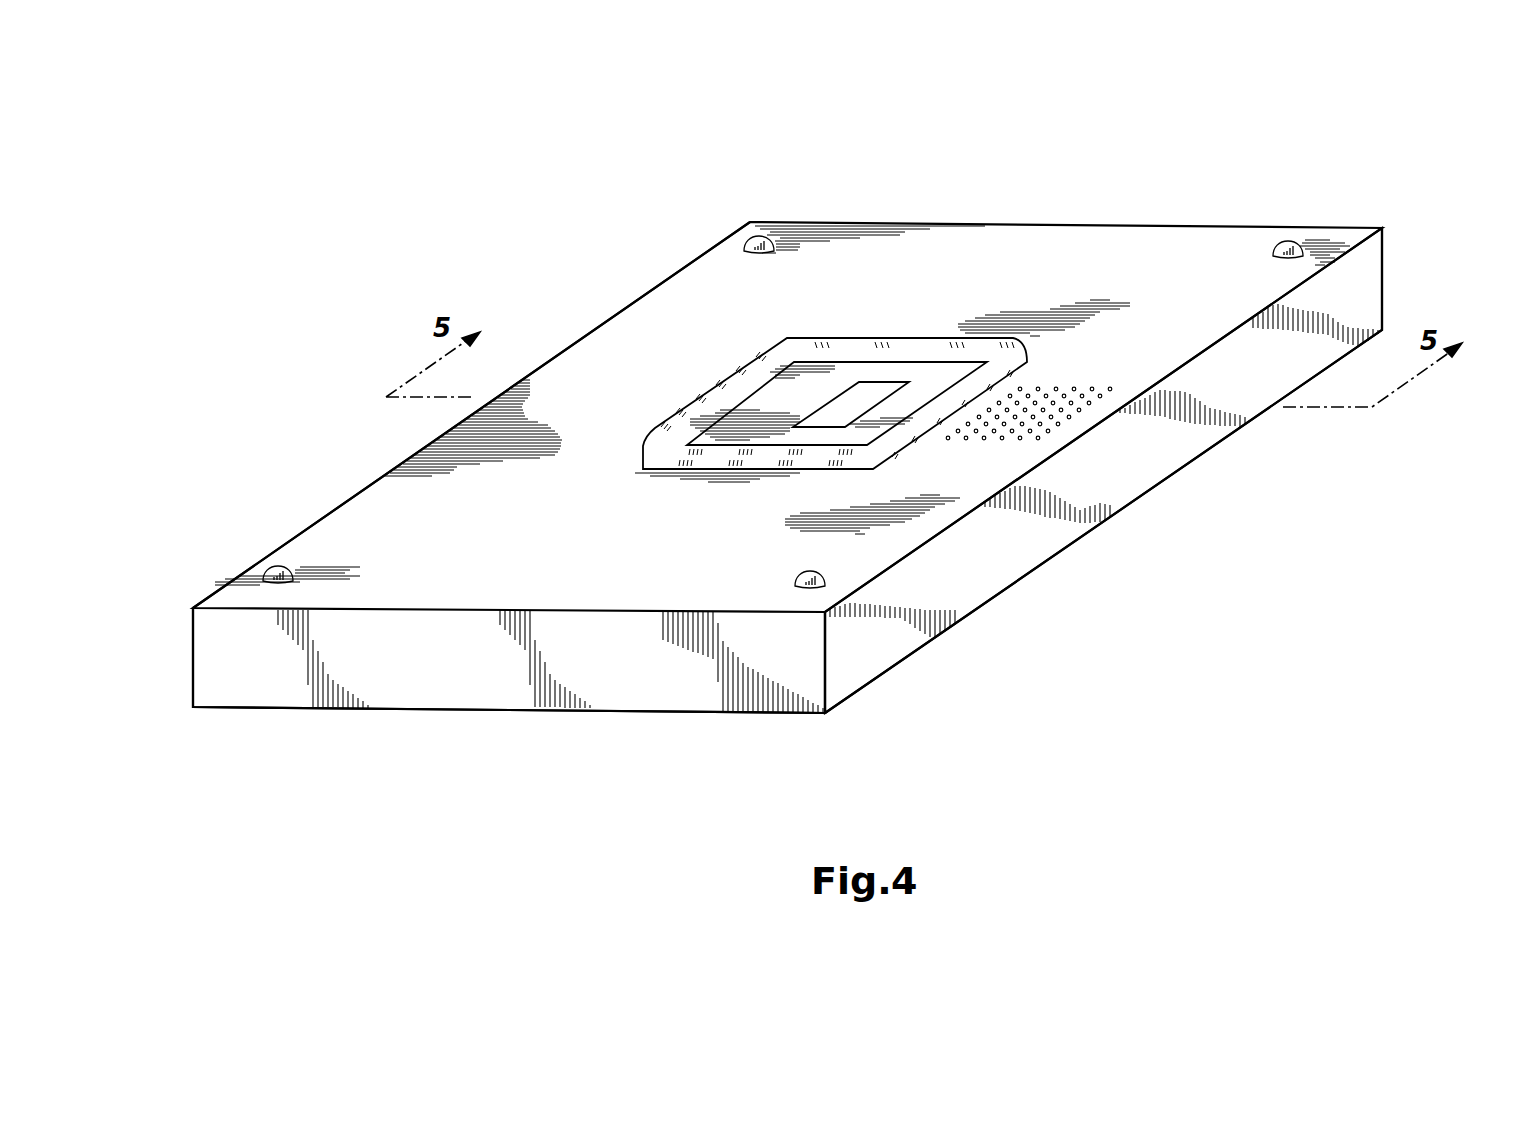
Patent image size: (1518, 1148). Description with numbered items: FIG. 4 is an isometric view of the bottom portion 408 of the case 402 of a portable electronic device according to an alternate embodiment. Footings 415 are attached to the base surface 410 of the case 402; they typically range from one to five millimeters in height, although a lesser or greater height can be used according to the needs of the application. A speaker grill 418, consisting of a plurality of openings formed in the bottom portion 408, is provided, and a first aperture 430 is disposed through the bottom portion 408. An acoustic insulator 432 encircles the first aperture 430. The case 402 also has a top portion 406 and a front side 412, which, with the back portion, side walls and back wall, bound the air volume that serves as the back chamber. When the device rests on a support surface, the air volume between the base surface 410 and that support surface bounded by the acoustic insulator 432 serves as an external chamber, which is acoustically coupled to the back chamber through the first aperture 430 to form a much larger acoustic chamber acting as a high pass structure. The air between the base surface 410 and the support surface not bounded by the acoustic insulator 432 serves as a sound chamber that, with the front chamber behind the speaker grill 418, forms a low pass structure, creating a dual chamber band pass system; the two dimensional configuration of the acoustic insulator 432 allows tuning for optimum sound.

The case 402 is at (1383, 257).
The top portion 406 is at (700, 712).
The bottom portion 408 is at (1110, 248).
The base surface 410 is at (415, 585).
The front side 412 is at (987, 578).
The footings 415 is at (753, 238).
The speaker grill 418 is at (1065, 397).
The first aperture 430 is at (866, 392).
The acoustic insulator 432 is at (853, 343).